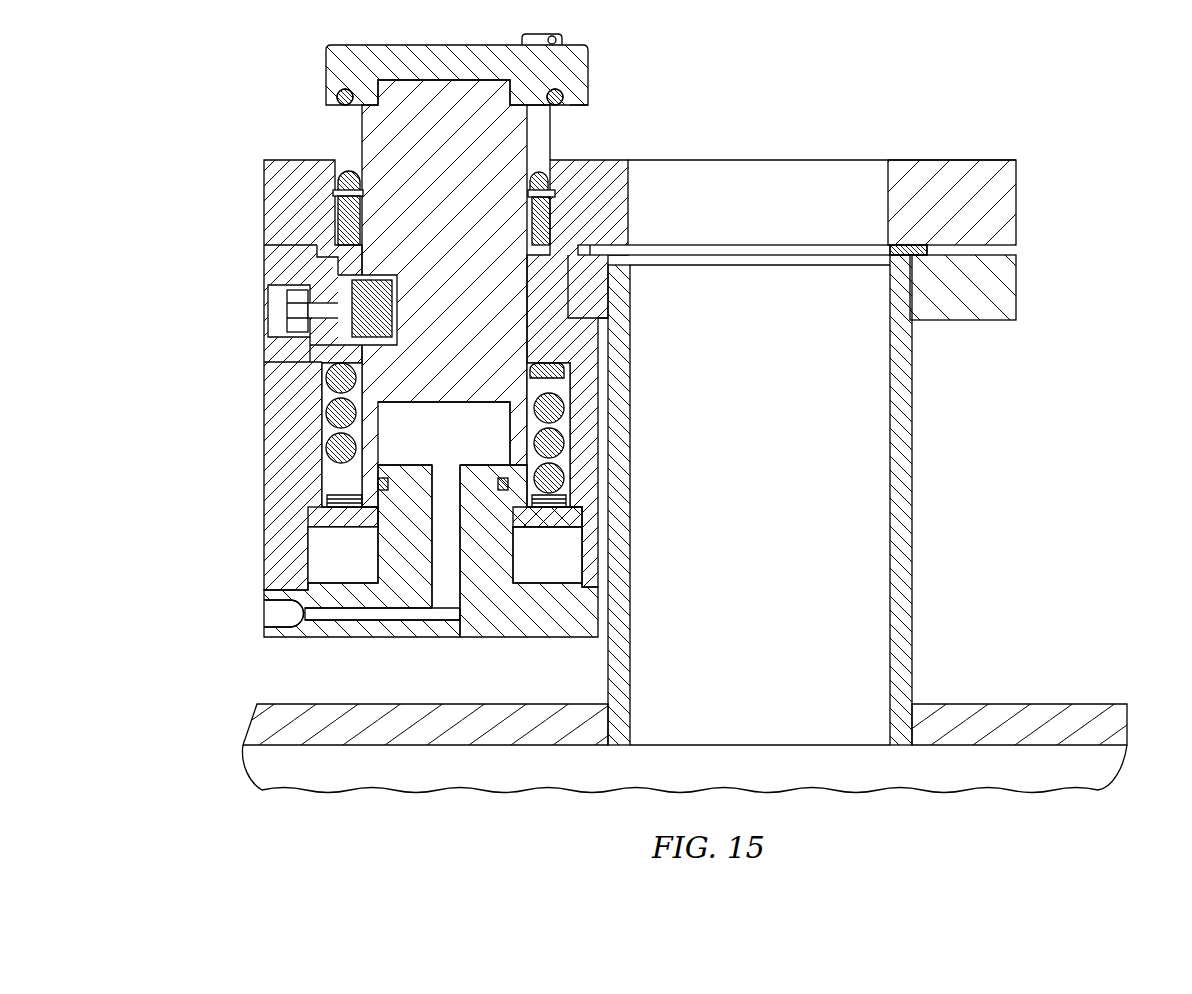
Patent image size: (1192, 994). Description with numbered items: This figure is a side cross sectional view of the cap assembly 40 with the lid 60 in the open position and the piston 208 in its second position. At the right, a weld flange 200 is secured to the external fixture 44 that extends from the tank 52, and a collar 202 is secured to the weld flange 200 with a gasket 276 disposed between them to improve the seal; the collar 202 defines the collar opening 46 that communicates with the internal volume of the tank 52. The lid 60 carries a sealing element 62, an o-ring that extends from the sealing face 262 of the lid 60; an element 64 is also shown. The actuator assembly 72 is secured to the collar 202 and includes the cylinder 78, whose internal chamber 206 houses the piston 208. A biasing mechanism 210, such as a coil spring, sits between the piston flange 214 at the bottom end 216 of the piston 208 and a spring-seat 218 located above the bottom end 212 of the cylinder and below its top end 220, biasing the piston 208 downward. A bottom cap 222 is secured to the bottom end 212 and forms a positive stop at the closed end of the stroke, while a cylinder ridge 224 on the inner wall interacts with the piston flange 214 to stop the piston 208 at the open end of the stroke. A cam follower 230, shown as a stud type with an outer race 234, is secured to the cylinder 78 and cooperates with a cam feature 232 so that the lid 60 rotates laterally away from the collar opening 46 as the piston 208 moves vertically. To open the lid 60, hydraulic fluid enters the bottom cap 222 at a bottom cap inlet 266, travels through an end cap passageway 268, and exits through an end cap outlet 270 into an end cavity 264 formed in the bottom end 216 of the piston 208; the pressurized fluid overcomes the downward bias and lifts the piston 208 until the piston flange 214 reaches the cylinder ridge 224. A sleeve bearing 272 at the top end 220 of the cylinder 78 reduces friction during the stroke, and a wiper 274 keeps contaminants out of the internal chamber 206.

The cap assembly 40 is at (1113, 94).
The external fixture 44 is at (910, 523).
The collar opening 46 is at (743, 182).
The tank 52 is at (1060, 703).
The lid 60 is at (326, 71).
The sealing element 62 is at (538, 108).
The o-ring 64 is at (590, 87).
The actuator assembly 72 is at (264, 538).
The cylinder 78 is at (446, 375).
The weld flange 200 is at (1017, 289).
The collar 202 is at (1017, 203).
The internal chamber 206 is at (322, 470).
The piston 208 is at (463, 183).
The biasing mechanism 210 is at (322, 437).
The bottom end of the cylinder 212 is at (264, 582).
The piston flange 214 is at (572, 518).
The bottom end of the piston 216 is at (446, 501).
The spring-seat 218 is at (560, 345).
The top end of the cylinder 220 is at (264, 245).
The bottom cap 222 is at (423, 637).
The cylinder ridge 224 is at (573, 507).
The cam follower 230 is at (290, 312).
The cam feature 232 is at (398, 300).
The outer race 234 is at (319, 310).
The sealing face 262 is at (580, 103).
The end cavity 264 is at (428, 417).
The bottom cap inlet 266 is at (264, 612).
The end cap passageway 268 is at (340, 614).
The end cap outlet 270 is at (446, 472).
The sleeve bearing 272 is at (527, 226).
The wiper 274 is at (340, 182).
The gasket 276 is at (890, 248).